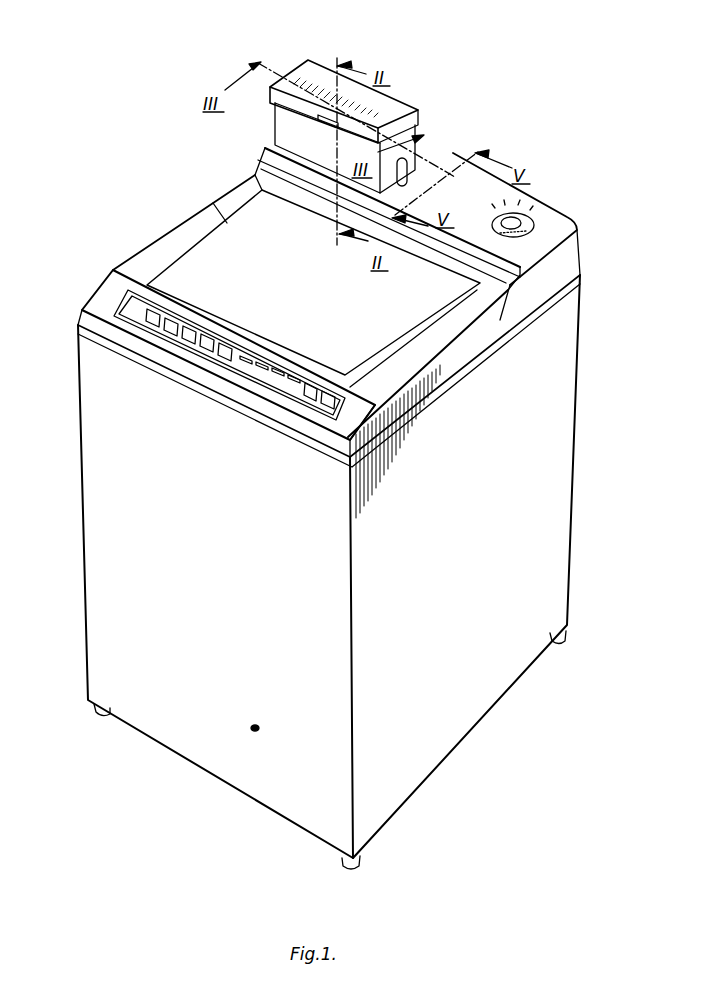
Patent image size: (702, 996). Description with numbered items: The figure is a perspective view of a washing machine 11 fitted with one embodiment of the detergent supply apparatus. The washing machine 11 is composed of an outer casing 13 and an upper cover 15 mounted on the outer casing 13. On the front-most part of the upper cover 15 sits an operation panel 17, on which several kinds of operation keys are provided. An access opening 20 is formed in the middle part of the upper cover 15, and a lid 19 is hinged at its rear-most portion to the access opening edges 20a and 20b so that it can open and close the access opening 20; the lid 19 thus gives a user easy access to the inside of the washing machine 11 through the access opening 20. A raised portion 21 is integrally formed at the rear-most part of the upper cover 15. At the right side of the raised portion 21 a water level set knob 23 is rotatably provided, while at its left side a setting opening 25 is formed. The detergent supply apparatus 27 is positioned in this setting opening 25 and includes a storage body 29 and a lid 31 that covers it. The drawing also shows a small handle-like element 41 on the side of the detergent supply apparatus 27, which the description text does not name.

The washing machine 11 is at (84, 412).
The outer casing 13 is at (90, 520).
The upper cover 15 is at (158, 250).
The operation panel 17 is at (233, 358).
The lid 19 is at (217, 210).
The access opening 20 is at (420, 317).
The access opening edge 20a is at (250, 177).
The access opening edge 20b is at (507, 330).
The raised portion 21 is at (535, 208).
The water level set knob 23 is at (535, 226).
The setting opening 25 is at (330, 170).
The detergent supply apparatus 27 is at (400, 100).
The storage body 29 is at (270, 120).
The lid 31 is at (318, 75).
The handle 41 is at (410, 160).